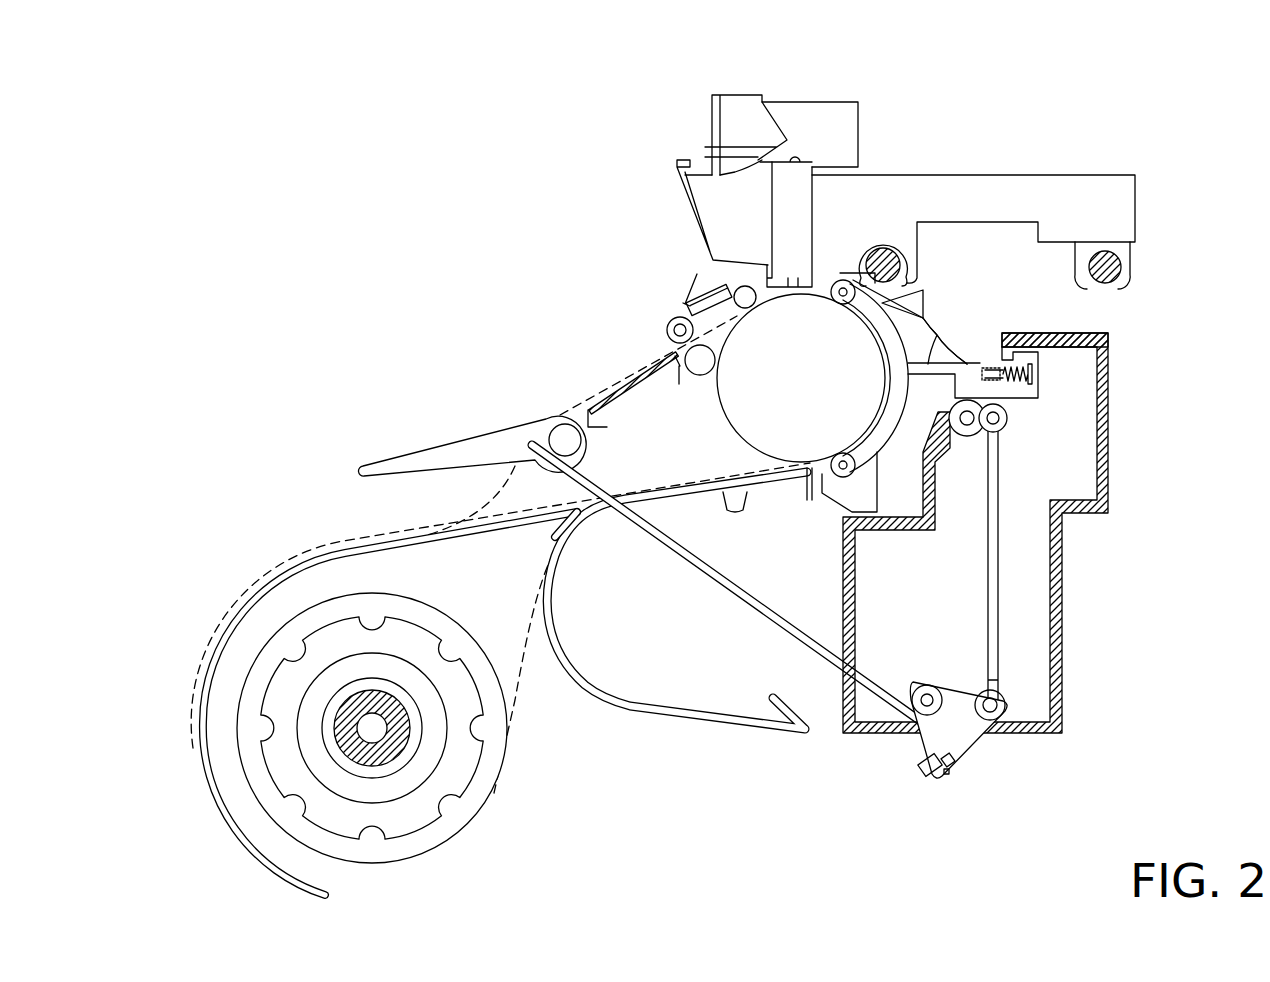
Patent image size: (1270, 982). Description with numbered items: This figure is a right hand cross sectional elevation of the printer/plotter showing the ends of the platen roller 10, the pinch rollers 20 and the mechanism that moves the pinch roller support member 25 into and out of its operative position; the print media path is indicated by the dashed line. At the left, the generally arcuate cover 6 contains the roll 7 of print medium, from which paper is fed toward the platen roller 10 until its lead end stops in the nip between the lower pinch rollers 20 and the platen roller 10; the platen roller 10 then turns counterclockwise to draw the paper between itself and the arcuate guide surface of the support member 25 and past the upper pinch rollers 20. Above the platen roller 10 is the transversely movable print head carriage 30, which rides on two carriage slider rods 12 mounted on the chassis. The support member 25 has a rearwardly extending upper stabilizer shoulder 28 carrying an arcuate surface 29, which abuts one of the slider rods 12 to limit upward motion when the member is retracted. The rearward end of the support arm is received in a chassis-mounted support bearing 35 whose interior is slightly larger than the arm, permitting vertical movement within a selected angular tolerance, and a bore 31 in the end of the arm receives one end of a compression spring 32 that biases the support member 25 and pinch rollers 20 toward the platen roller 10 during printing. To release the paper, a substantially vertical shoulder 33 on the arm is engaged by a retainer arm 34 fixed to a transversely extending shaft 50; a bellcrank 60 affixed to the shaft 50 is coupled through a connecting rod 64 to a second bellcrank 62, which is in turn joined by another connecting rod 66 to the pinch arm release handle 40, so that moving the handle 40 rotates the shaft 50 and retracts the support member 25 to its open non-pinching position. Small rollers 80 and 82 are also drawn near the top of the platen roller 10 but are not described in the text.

The arcuate cover 6 is at (206, 800).
The roll of print medium 7 is at (455, 843).
The platen roller 10 is at (740, 440).
The printer carriage slider rods 12 is at (883, 252).
The pinch rollers 20 is at (836, 300).
The pinch roller support member 25 is at (905, 460).
The upper stabilizer shoulder 28 is at (875, 330).
The arcuate surface 29 is at (905, 280).
The print head carriage 30 is at (830, 84).
The bore 31 is at (985, 365).
The compression spring 32 is at (1038, 388).
The vertically extending shoulder 33 is at (940, 340).
The retainer arm 34 is at (886, 400).
The support bearing 35 is at (1038, 372).
The pinch arm release handle 40 is at (452, 428).
The transversely extending shaft 50 is at (988, 445).
The bellcrank 60 is at (1006, 426).
The second bellcrank 62 is at (976, 742).
The connecting rod 64 is at (988, 605).
The connecting rod 66 is at (752, 605).
The guide roller 80 is at (748, 312).
The idler roller 82 is at (698, 374).